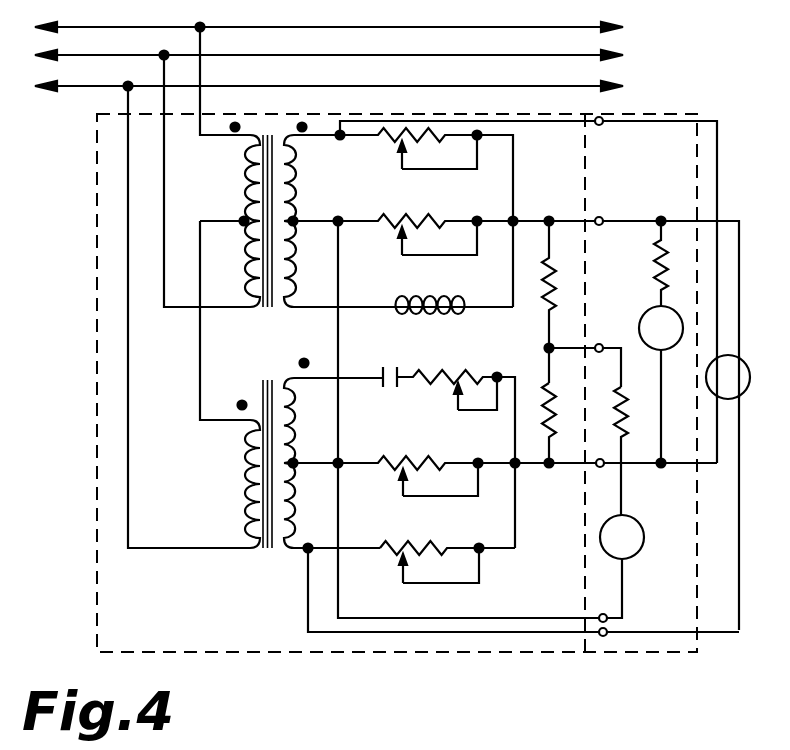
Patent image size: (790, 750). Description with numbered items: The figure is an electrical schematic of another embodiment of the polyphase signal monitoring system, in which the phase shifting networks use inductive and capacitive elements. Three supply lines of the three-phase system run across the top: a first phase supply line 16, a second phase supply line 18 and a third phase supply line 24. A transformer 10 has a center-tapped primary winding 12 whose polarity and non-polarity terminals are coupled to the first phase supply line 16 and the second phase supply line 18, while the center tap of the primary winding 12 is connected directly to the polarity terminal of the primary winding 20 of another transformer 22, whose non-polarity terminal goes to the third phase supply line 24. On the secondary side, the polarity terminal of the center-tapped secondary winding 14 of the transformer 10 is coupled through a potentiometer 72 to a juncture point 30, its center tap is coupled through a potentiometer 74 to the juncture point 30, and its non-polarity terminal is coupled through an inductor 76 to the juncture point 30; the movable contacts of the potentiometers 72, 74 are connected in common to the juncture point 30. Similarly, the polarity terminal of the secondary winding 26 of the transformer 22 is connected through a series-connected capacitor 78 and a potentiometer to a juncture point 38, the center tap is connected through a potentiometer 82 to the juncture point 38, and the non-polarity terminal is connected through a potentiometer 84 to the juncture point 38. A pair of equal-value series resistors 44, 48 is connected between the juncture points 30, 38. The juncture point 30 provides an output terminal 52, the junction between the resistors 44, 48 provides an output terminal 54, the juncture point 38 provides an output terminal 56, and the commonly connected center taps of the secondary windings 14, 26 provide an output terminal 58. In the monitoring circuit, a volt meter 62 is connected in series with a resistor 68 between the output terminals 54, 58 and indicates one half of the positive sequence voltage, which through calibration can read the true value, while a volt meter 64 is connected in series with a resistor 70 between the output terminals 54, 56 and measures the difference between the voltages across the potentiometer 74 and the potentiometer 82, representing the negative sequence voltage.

The transformer 10 is at (297, 212).
The primary winding 12 is at (242, 246).
The secondary winding 14 is at (297, 250).
The first phase supply line 16 is at (245, 27).
The second phase supply line 18 is at (232, 55).
The primary winding 20 is at (246, 530).
The transformer 22 is at (287, 384).
The third phase supply line 24 is at (222, 86).
The secondary winding 26 is at (294, 414).
The juncture point 30 is at (514, 220).
The juncture point 38 is at (517, 467).
The resistor 44 is at (556, 282).
The resistor 48 is at (556, 392).
The output terminal 52 is at (600, 216).
The output terminal 54 is at (599, 344).
The output terminal 56 is at (605, 468).
The output terminal 58 is at (608, 620).
The volt meter 62 is at (641, 552).
The volt meter 64 is at (684, 328).
The resistor 68 is at (650, 386).
The resistor 70 is at (658, 253).
The potentiometer 72 is at (392, 138).
The potentiometer 74 is at (404, 218).
The inductor 76 is at (458, 297).
The capacitor 78 is at (440, 445).
The potentiometer 82 is at (430, 437).
The potentiometer 84 is at (396, 542).